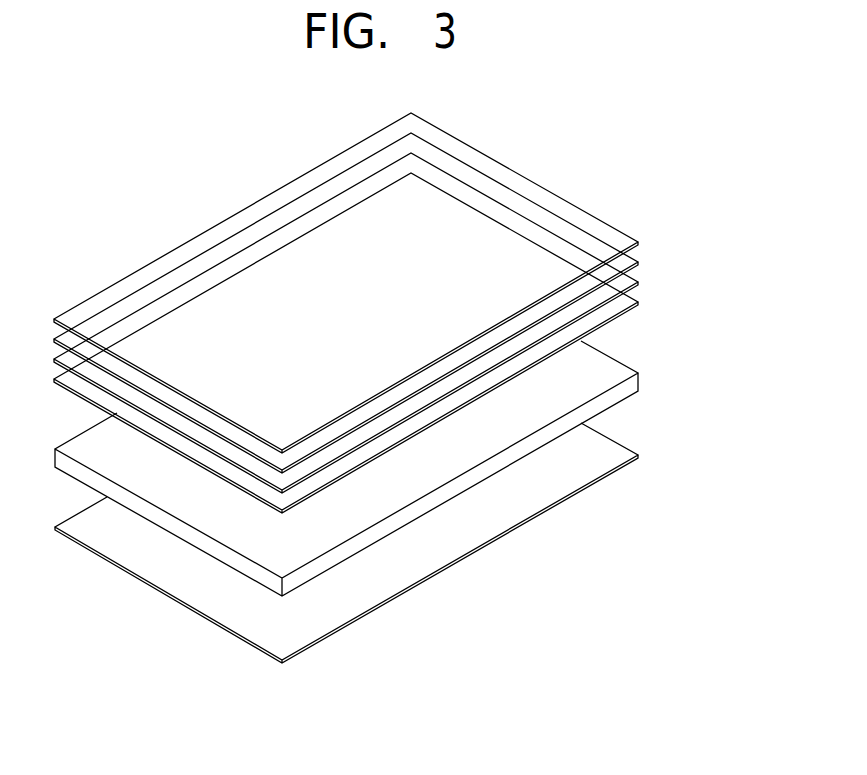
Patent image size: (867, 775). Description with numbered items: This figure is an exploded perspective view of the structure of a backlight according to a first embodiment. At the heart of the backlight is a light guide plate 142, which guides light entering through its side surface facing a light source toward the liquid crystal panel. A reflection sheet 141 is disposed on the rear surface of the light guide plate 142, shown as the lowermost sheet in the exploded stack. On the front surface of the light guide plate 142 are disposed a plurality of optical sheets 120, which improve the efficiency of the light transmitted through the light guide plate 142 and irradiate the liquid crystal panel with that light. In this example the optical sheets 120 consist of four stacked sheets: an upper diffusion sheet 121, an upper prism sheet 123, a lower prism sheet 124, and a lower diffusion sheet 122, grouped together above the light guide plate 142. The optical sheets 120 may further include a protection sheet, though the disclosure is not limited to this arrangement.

The optical sheets 120 is at (407, 313).
The upper diffusion sheet 121 is at (641, 241).
The upper prism sheet 123 is at (641, 262).
The lower prism sheet 124 is at (641, 284).
The lower diffusion sheet 122 is at (720, 227).
The light guide plate 142 is at (639, 381).
The reflection sheet 141 is at (627, 449).